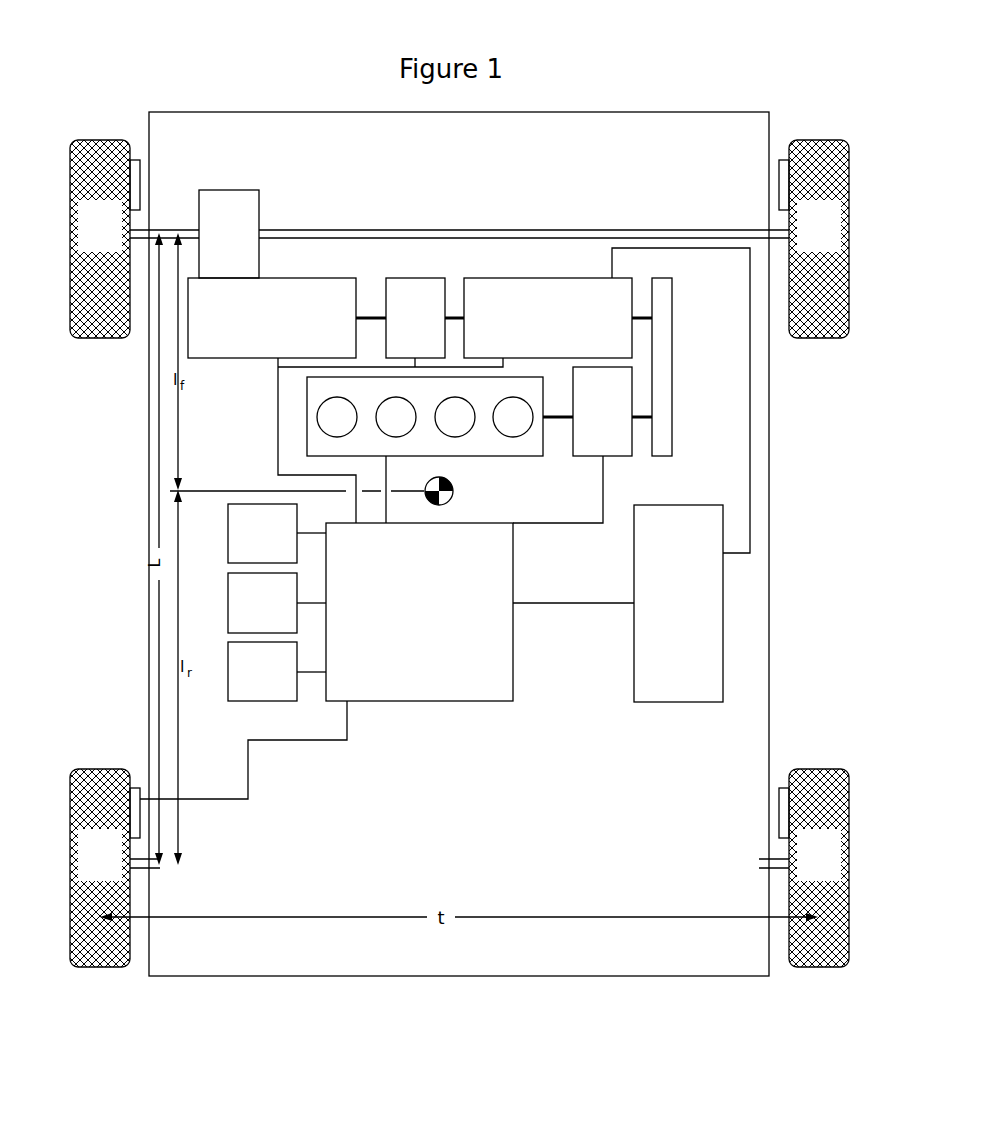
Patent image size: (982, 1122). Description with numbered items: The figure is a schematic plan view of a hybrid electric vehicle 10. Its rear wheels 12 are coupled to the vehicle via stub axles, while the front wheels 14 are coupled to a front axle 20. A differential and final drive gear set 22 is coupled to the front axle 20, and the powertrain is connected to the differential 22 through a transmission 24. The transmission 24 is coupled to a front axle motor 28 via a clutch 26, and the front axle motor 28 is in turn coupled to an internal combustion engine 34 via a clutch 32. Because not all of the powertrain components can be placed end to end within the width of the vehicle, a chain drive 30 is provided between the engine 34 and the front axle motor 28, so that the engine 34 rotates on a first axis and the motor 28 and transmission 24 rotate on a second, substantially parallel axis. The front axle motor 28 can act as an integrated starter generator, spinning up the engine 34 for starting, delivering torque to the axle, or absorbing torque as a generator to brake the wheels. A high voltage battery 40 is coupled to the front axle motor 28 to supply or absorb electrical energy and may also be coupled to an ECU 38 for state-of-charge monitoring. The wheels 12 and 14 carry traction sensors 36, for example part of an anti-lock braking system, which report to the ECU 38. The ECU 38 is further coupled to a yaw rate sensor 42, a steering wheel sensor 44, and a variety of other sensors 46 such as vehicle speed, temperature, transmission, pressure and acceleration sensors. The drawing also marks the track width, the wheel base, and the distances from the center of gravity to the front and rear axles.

The hybrid electric vehicle 10 is at (459, 544).
The rear wheels 12 is at (459, 868).
The front wheels 14 is at (459, 239).
The front axle 20 is at (523, 227).
The differential and final drive gear set 22 is at (229, 234).
The transmission 24 is at (272, 318).
The clutch 26 is at (415, 318).
The front axle motor 28 is at (548, 318).
The chain drive 30 is at (672, 338).
The clutch 32 is at (602, 411).
The internal combustion engine 34 is at (425, 416).
The traction sensors 36 is at (784, 736).
The ECU 38 is at (419, 612).
The battery 40 is at (678, 603).
The yaw rate sensor 42 is at (277, 533).
The steering wheel sensor 44 is at (277, 603).
The other sensors 46 is at (277, 671).